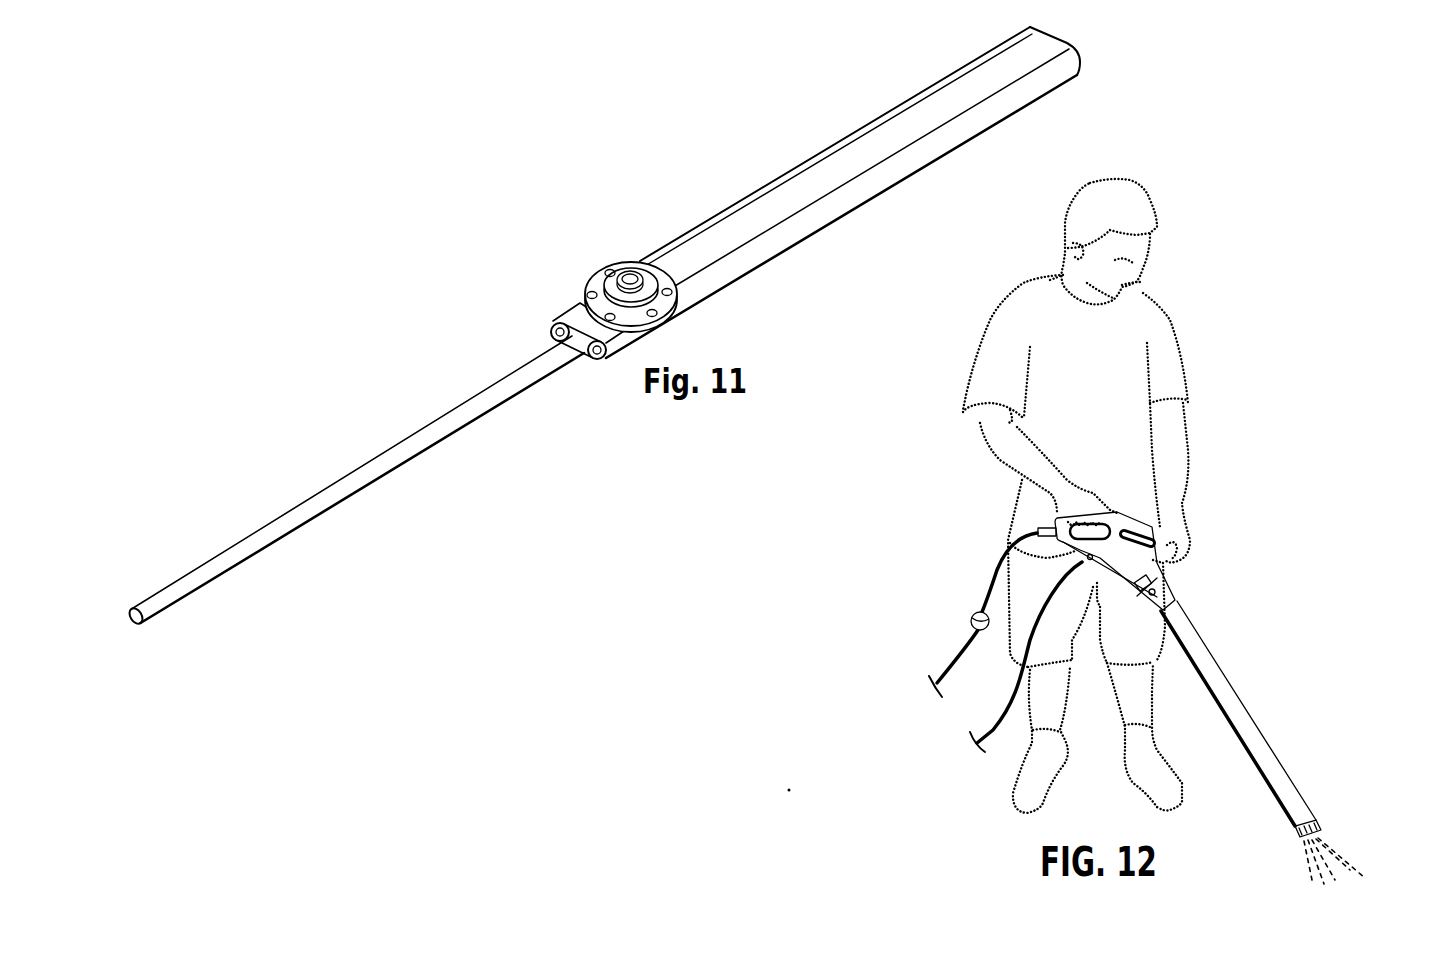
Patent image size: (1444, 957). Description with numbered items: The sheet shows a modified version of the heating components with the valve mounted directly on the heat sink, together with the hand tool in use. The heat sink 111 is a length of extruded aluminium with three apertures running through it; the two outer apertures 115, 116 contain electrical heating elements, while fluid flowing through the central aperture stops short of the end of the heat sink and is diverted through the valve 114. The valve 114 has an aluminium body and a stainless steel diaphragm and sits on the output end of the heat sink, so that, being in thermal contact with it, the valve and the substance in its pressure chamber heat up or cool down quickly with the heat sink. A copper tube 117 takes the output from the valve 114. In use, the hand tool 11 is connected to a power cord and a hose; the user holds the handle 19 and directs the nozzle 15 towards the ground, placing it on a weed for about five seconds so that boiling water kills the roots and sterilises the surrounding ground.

In FIG. 11, the heat sink 111 is at (862, 150).
In FIG. 11, the valve 114 is at (593, 286).
In FIG. 11, the outer aperture 115 is at (551, 327).
In FIG. 11, the outer aperture 116 is at (583, 363).
In FIG. 11, the copper tube 117 is at (333, 495).
In FIG. 12, the hand tool 11 is at (1235, 675).
In FIG. 12, the handle 19 is at (1157, 528).
In FIG. 12, the nozzle 15 is at (1318, 828).